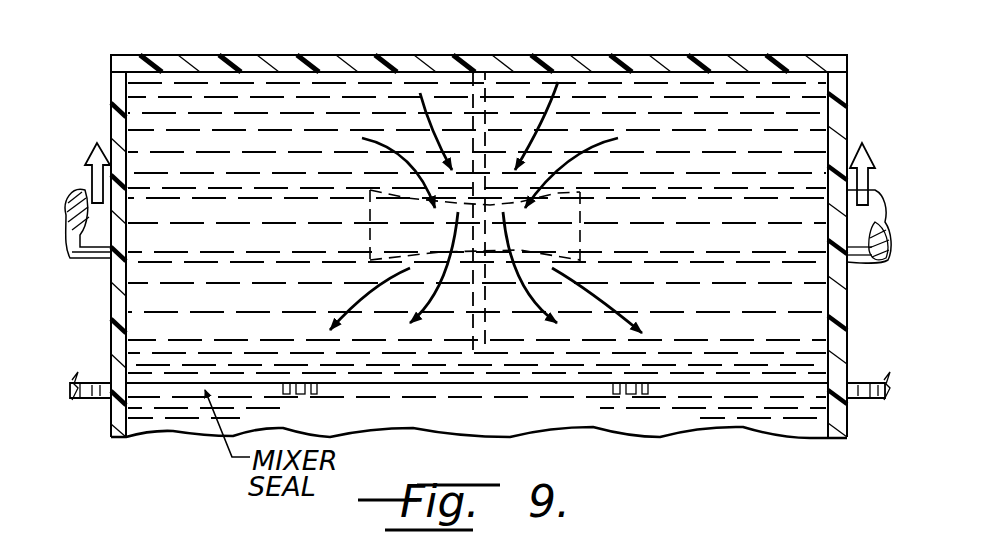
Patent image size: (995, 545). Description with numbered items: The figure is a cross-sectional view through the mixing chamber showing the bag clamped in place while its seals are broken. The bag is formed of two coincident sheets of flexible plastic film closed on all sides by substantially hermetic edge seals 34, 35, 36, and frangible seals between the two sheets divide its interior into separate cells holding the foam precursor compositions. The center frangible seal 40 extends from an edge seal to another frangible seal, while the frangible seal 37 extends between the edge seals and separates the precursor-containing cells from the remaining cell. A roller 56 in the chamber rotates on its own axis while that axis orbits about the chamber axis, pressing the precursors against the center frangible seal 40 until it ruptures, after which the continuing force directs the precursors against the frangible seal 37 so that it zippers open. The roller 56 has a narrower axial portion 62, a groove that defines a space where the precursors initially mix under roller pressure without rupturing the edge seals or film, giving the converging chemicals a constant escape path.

The edge seal 34 is at (838, 86).
The edge seal 35 is at (712, 66).
The edge seal 36 is at (119, 97).
The frangible seal 37 is at (764, 362).
The center frangible seal 40 is at (487, 120).
The roller 56 is at (70, 258).
The narrower axial portion 62 is at (410, 251).